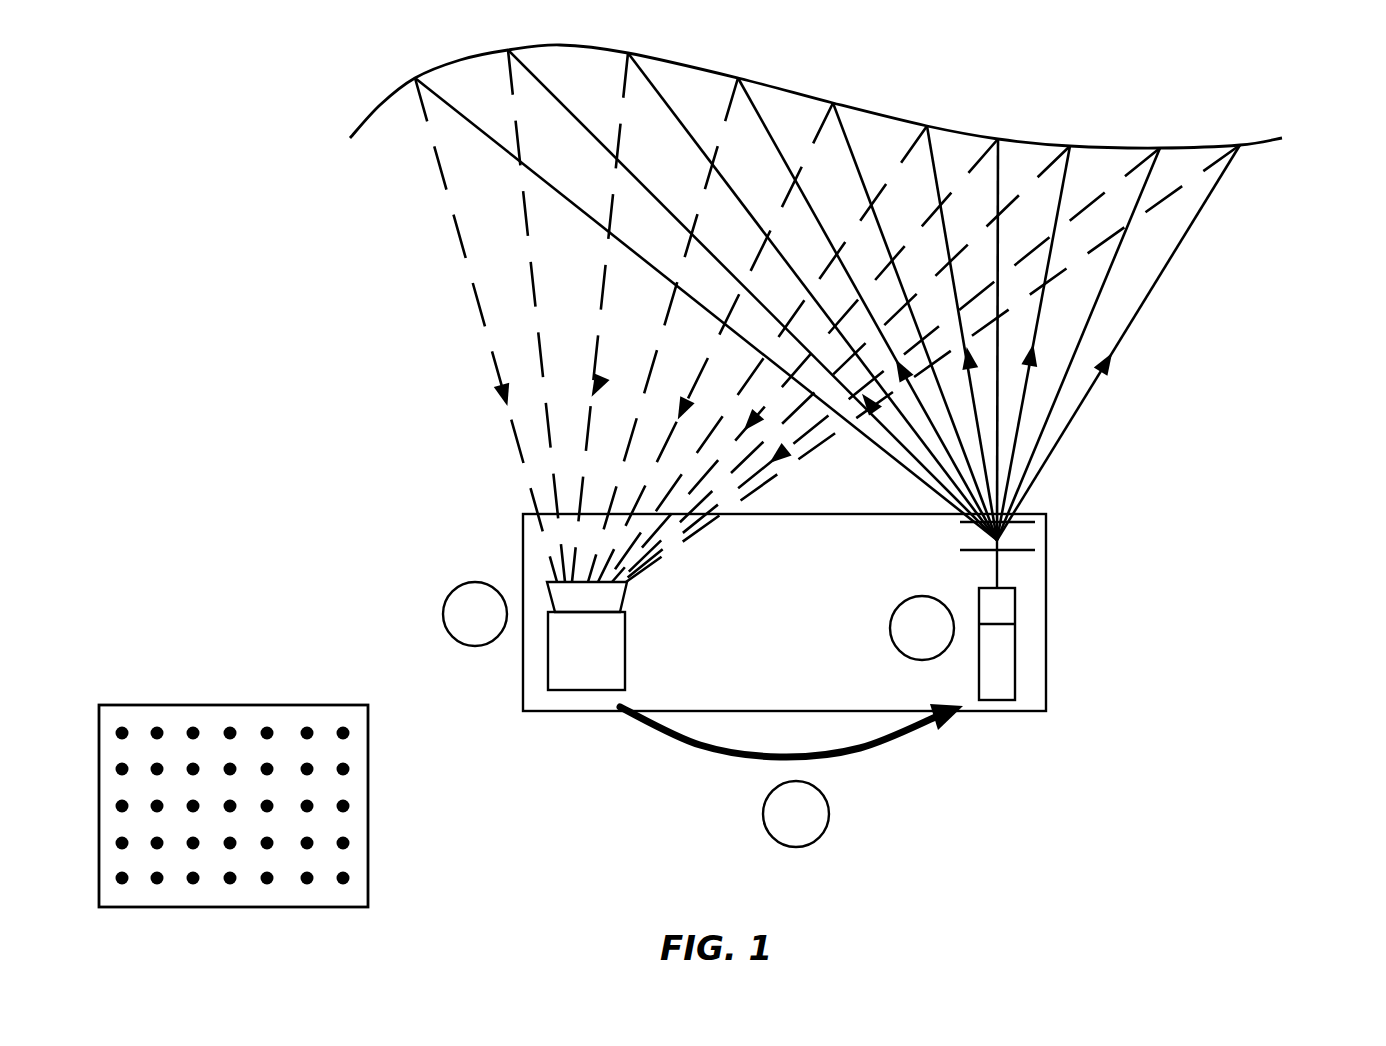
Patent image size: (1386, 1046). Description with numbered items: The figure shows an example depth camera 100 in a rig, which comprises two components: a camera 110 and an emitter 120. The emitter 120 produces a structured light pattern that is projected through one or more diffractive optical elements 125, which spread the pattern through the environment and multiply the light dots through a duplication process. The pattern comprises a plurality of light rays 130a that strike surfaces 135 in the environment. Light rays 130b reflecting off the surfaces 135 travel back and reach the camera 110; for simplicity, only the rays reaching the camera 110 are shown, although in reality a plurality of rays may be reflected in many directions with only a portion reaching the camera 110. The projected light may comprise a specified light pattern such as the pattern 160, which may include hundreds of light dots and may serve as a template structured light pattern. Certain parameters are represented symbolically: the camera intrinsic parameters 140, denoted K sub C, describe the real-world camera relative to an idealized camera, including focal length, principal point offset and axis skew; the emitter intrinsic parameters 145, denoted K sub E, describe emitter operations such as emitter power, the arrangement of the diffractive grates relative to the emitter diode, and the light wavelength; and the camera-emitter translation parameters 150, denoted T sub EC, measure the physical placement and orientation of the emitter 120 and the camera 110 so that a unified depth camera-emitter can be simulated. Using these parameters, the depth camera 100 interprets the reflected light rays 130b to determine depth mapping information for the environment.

The depth camera 100 is at (784, 612).
The camera 110 is at (626, 655).
The emitter 120 is at (1016, 668).
The diffractive optical elements 125 is at (1035, 522).
The light rays 130a is at (1172, 257).
The reflected light rays 130b is at (470, 263).
The surfaces 135 is at (1282, 138).
The camera intrinsic parameters 140 is at (452, 590).
The emitter intrinsic parameters 145 is at (893, 603).
The camera-emitter translation parameters 150 is at (773, 790).
The pattern 160 is at (368, 807).